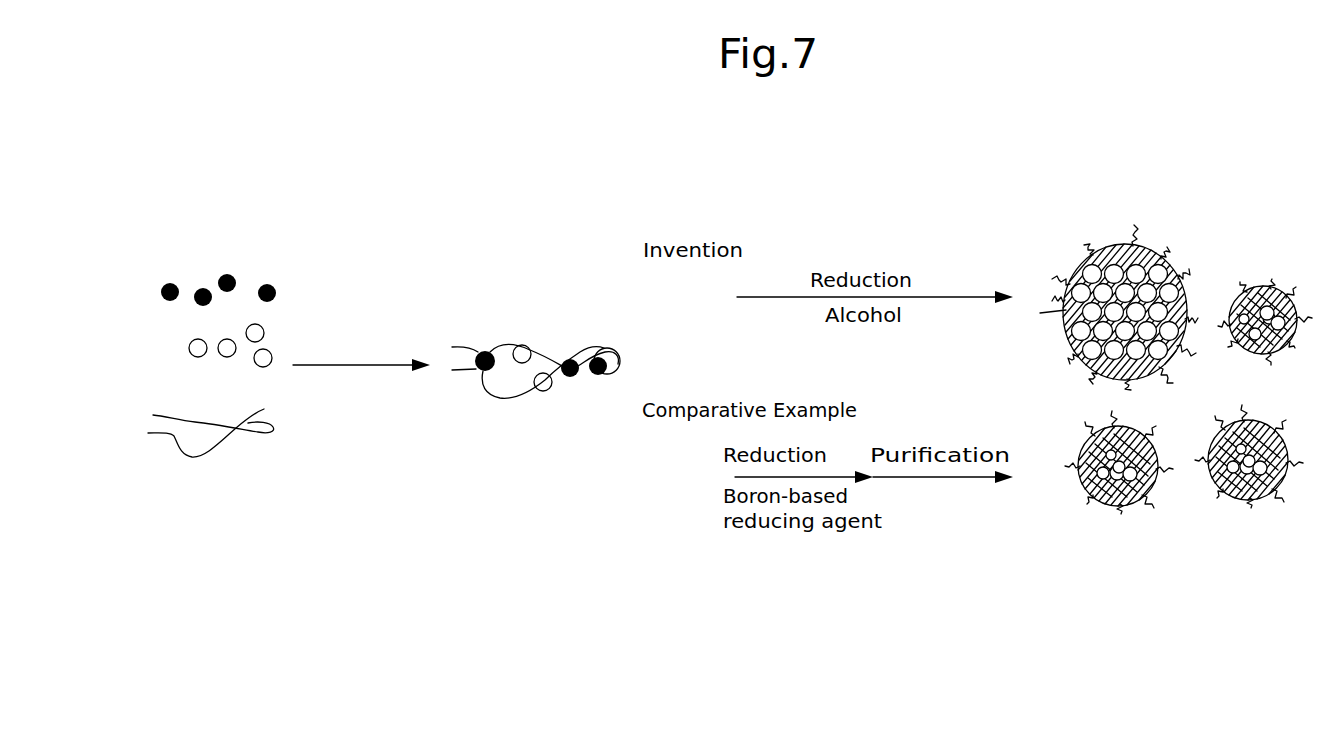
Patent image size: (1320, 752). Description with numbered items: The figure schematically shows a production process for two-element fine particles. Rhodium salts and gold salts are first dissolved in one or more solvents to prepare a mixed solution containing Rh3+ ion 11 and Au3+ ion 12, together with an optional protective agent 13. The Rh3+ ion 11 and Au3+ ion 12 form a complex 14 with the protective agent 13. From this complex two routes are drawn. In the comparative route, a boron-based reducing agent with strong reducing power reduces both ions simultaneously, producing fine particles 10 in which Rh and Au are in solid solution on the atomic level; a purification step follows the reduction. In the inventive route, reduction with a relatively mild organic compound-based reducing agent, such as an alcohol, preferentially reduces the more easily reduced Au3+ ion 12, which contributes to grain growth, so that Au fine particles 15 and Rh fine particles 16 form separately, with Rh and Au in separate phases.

The fine particles 10 is at (1228, 507).
The Rh3+ ion 11 is at (277, 283).
The Au3+ ion 12 is at (262, 328).
The protective agent 13 is at (264, 409).
The complex 14 is at (533, 403).
The Au fine particles 15 is at (1123, 240).
The Rh fine particles 16 is at (1267, 275).